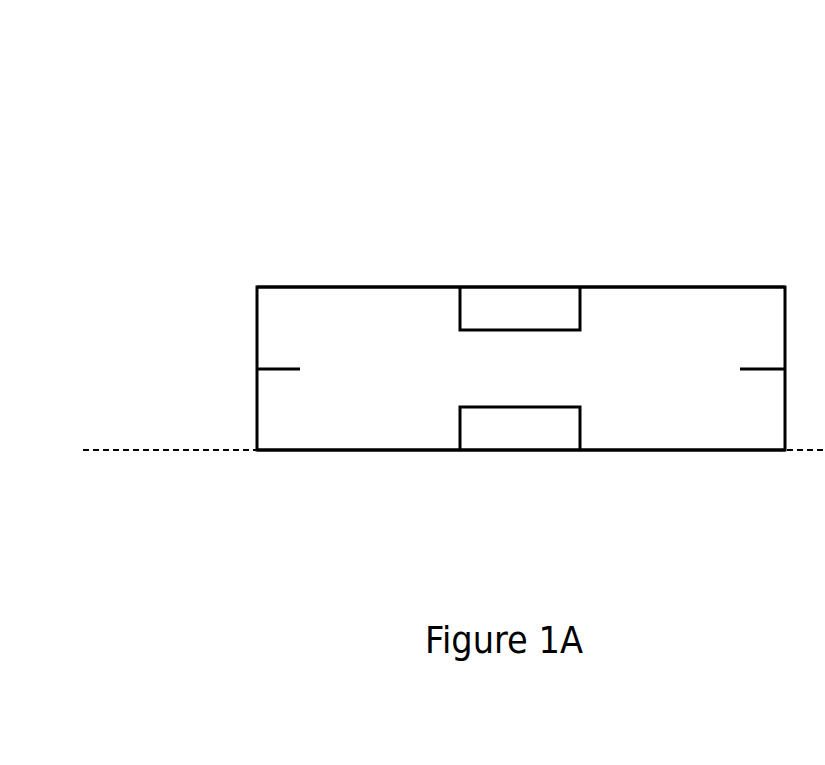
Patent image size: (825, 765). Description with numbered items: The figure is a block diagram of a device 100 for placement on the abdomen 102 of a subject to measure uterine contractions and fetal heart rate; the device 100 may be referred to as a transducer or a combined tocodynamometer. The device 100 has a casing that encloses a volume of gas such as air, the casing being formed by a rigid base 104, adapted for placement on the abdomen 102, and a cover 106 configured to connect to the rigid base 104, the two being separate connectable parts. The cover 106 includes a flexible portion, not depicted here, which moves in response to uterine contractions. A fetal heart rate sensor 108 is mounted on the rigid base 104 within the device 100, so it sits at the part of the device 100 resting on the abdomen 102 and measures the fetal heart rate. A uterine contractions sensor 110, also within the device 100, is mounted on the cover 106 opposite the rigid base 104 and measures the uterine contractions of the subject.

The device 100 is at (686, 129).
The abdomen 102 is at (211, 531).
The rigid base 104 is at (690, 450).
The cover 106 is at (695, 287).
The fetal heart rate sensor 108 is at (520, 432).
The uterine contractions sensor 110 is at (517, 312).